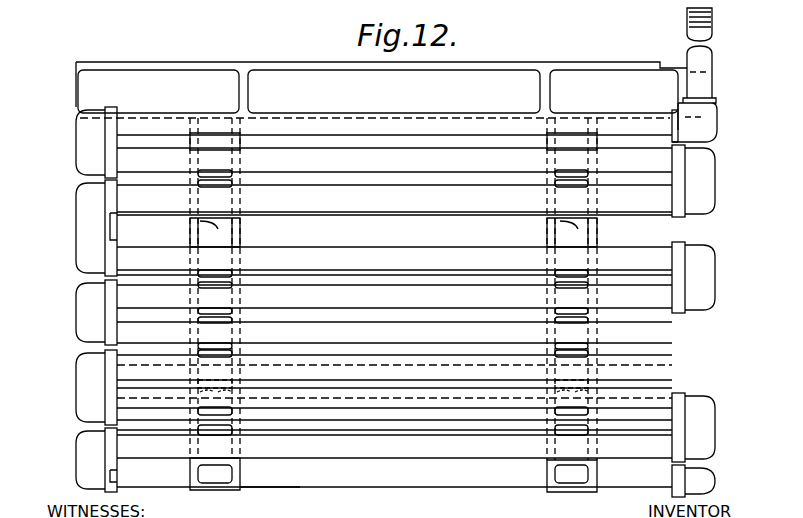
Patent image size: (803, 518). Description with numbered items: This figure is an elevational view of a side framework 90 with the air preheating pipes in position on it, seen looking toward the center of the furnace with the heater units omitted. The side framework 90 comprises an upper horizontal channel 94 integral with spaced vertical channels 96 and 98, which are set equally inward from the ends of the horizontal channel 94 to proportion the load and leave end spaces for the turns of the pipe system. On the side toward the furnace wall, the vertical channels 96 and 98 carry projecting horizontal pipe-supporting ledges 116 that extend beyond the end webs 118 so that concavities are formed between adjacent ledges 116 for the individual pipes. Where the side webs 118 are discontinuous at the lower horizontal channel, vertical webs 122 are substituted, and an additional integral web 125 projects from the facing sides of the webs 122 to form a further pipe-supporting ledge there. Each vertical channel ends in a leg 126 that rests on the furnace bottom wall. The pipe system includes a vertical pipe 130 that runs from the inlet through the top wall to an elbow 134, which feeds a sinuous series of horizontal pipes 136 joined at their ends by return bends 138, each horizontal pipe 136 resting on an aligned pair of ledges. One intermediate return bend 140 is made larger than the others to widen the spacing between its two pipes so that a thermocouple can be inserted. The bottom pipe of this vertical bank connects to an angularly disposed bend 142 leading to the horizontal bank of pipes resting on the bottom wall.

The side framework 90 is at (286, 48).
The upper horizontal channel 94 is at (522, 78).
The vertical channel 96 is at (598, 240).
The vertical channel 98 is at (192, 228).
The pipe-supporting ledge 116 is at (218, 222).
The end web 118 is at (188, 490).
The vertical web 122 is at (245, 385).
The integral web 125 is at (278, 402).
The leg 126 is at (245, 492).
The vertical pipe 130 is at (716, 22).
The elbow 134 is at (715, 130).
The horizontal pipe 136 is at (427, 213).
The return bend 138 is at (712, 193).
The intermediate return bend 140 is at (80, 240).
The bend 142 is at (80, 458).